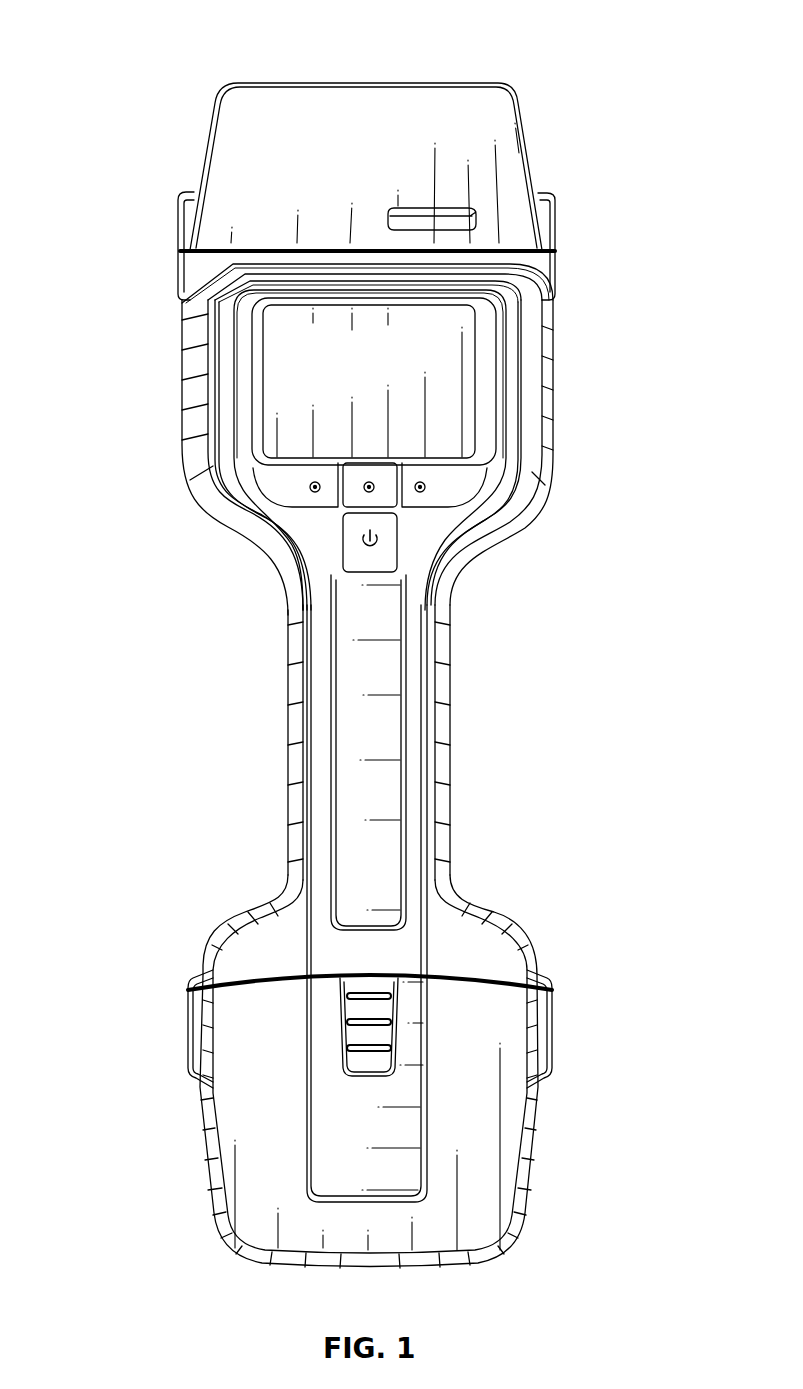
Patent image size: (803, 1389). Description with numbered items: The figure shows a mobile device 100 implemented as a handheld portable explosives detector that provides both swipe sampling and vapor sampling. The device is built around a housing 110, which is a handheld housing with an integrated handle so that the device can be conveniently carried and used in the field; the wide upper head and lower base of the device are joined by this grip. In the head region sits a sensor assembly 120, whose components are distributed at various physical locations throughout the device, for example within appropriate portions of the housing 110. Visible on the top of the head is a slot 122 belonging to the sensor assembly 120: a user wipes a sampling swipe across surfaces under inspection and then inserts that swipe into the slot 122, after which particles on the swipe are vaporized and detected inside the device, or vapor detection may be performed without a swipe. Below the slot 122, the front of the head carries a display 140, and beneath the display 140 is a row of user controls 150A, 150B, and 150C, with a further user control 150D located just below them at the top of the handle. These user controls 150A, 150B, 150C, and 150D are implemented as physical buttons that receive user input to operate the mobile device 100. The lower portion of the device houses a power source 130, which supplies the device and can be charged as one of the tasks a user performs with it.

The mobile device 100 is at (345, 643).
The housing 110 is at (288, 690).
The sensor assembly 120 is at (180, 85).
The slot 122 is at (456, 200).
The power source 130 is at (180, 992).
The display 140 is at (398, 372).
The user control 150A is at (276, 481).
The user control 150B is at (357, 487).
The user control 150C is at (462, 481).
The user control 150D is at (391, 551).